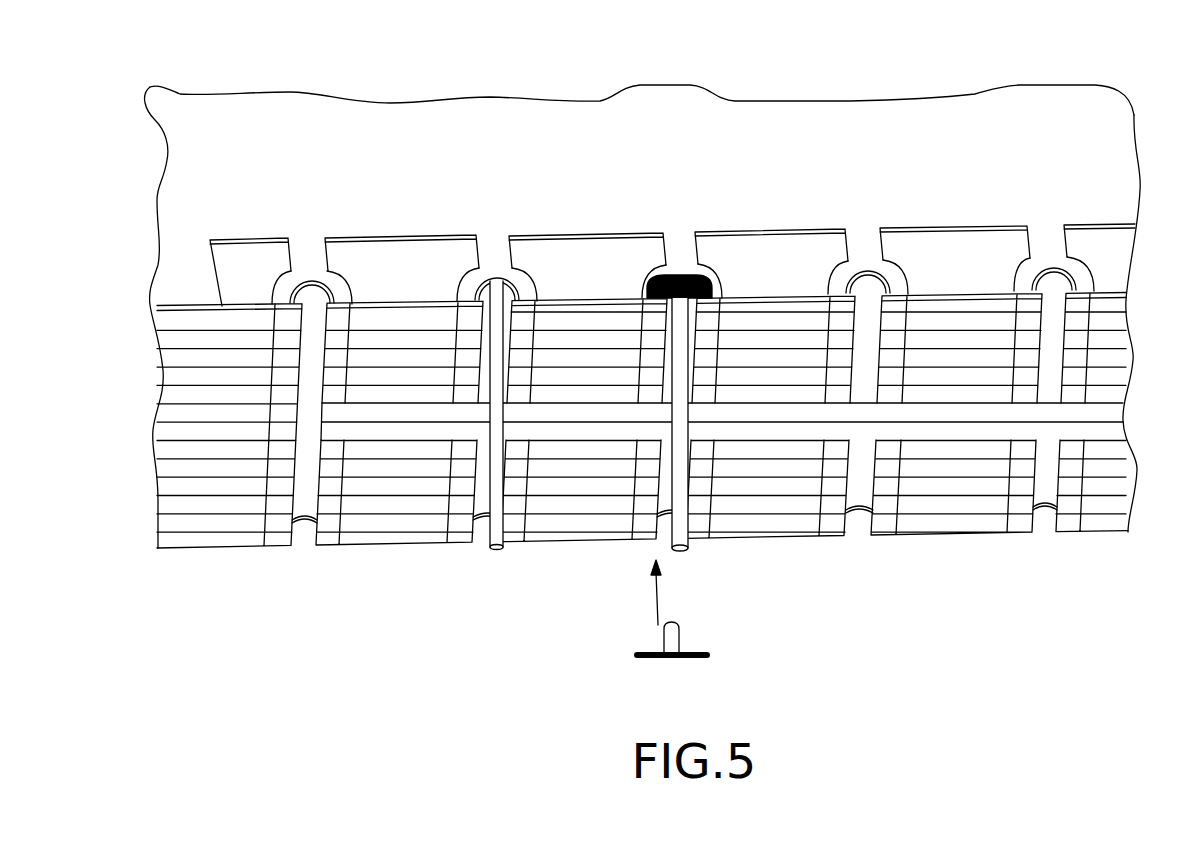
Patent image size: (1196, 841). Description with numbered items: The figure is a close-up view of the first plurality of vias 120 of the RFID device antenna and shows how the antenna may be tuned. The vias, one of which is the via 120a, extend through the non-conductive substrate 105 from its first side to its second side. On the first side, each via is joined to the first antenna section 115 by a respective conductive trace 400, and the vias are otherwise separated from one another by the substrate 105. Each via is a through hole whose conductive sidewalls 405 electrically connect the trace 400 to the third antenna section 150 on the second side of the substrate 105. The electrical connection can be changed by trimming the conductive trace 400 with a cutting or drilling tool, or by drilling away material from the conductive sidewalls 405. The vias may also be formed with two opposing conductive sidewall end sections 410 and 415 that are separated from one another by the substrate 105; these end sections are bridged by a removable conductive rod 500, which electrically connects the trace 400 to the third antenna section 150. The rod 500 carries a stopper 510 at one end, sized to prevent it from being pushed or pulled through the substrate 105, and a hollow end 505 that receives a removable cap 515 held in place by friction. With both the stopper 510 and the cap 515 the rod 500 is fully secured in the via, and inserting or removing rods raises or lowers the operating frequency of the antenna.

The first plurality of vias 120 is at (977, 37).
The first antenna section 115 is at (334, 128).
The via 120a is at (1005, 273).
The conductive trace 400 is at (302, 262).
The conductive sidewall end section 415 is at (457, 327).
The rod 500 is at (496, 292).
The stopper 510 is at (675, 276).
The hollow end 505 is at (688, 548).
The cap 515 is at (673, 637).
The conductive sidewalls 405 is at (1070, 412).
The conductive sidewall end section 410 is at (457, 505).
The third antenna section 150 is at (243, 548).
The substrate 105 is at (1042, 248).